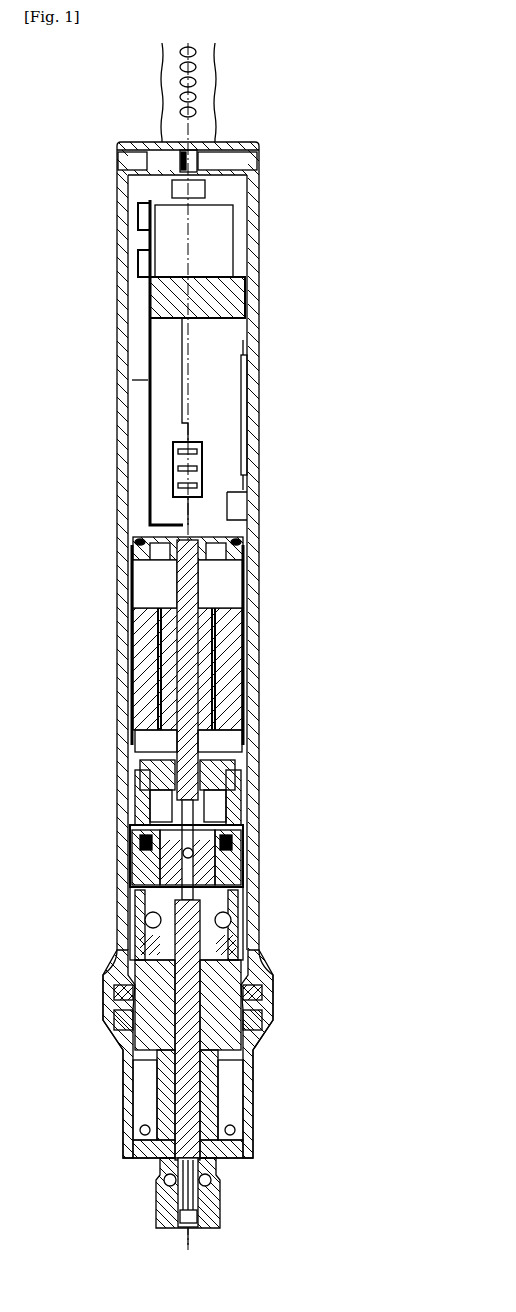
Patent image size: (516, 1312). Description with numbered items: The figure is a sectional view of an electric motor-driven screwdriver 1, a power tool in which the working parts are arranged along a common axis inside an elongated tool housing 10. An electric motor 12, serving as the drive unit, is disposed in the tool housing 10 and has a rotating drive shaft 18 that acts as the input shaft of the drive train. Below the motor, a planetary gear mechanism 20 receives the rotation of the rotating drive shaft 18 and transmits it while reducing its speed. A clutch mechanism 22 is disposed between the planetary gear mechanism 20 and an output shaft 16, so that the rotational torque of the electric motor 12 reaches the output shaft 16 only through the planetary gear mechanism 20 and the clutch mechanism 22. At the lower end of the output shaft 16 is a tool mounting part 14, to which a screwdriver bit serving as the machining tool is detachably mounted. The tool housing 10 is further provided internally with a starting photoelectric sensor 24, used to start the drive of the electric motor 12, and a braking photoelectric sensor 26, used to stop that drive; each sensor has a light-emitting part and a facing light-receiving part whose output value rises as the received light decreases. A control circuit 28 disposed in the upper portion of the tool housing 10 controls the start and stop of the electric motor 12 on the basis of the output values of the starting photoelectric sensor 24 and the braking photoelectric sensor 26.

The electric motor-driven screwdriver 1 is at (325, 192).
The tool housing 10 is at (122, 420).
The electric motor 12 is at (177, 650).
The tool mounting part 14 is at (157, 1205).
The output shaft 16 is at (150, 1060).
The rotating drive shaft 18 is at (135, 790).
The planetary gear mechanism 20 is at (135, 860).
The clutch mechanism 22 is at (130, 895).
The starting photoelectric sensor 24 is at (255, 1017).
The braking photoelectric sensor 26 is at (255, 990).
The control circuit 28 is at (152, 482).